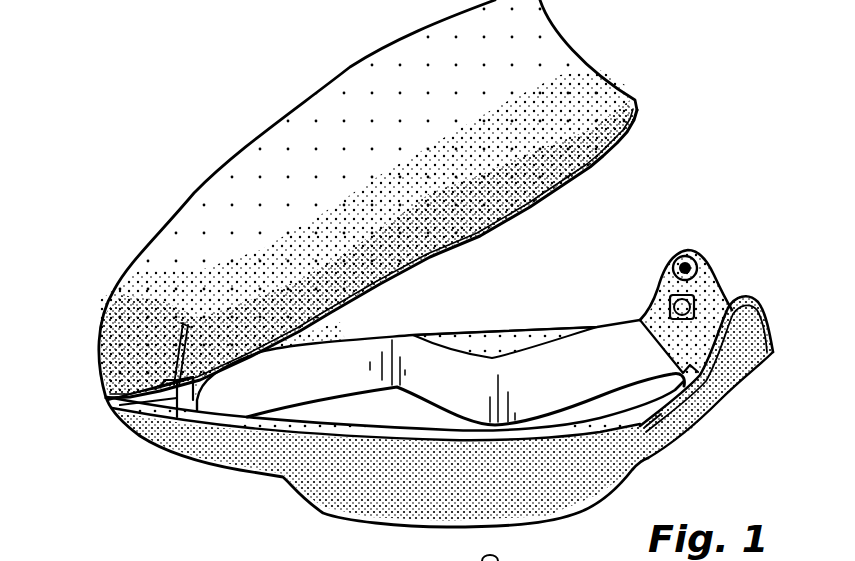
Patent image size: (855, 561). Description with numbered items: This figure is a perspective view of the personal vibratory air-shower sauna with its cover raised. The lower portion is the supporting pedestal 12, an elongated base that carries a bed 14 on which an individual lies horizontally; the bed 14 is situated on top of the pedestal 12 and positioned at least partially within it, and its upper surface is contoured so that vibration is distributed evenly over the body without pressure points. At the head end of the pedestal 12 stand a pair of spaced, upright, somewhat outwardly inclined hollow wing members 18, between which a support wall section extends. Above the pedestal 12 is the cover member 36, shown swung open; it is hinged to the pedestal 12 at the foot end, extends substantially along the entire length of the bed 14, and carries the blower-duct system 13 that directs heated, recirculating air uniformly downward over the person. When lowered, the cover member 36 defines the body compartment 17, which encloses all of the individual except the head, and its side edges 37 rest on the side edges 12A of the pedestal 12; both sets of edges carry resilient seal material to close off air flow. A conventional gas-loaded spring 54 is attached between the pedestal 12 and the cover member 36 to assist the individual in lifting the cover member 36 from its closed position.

The supporting pedestal 12 is at (287, 478).
The side edges of the pedestal 12A is at (514, 329).
The blower-duct system 13 is at (700, 250).
The bed 14 is at (579, 363).
The body compartment 17 is at (707, 262).
The hollow wing members 18 is at (695, 292).
The cover member 36 is at (398, 58).
The side edges of the cover member 37 is at (476, 238).
The gas-loaded spring 54 is at (170, 353).